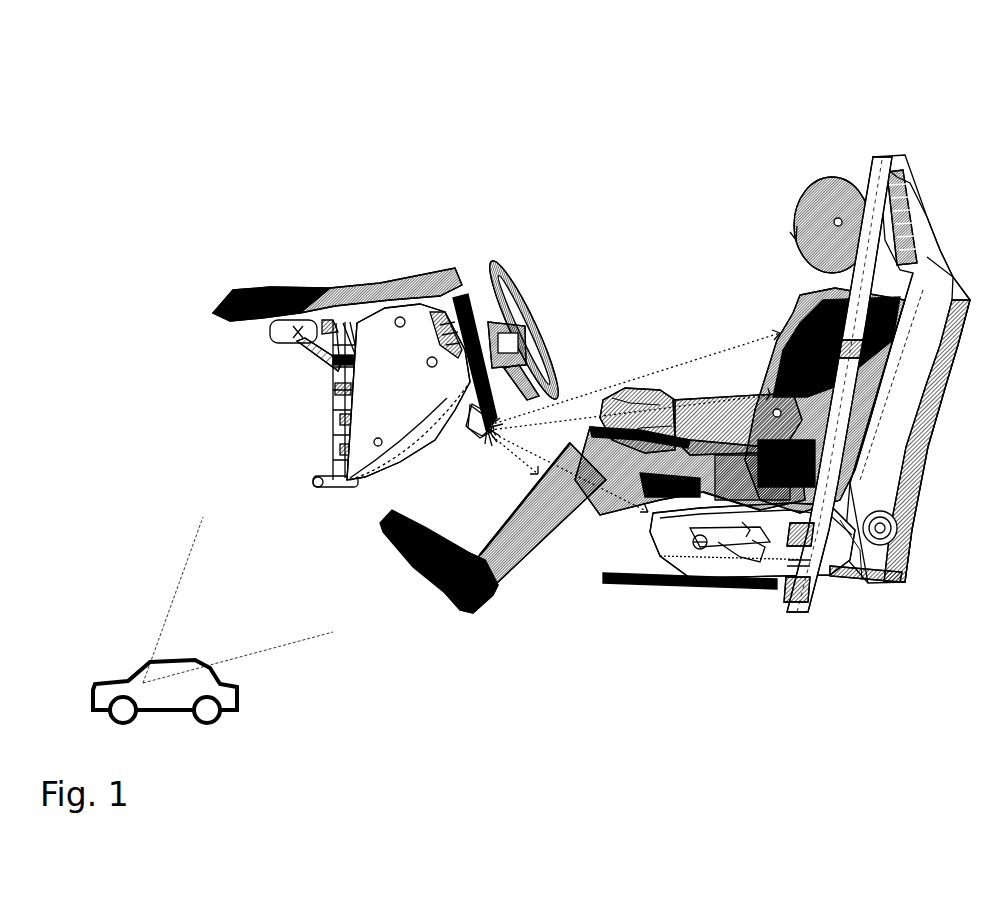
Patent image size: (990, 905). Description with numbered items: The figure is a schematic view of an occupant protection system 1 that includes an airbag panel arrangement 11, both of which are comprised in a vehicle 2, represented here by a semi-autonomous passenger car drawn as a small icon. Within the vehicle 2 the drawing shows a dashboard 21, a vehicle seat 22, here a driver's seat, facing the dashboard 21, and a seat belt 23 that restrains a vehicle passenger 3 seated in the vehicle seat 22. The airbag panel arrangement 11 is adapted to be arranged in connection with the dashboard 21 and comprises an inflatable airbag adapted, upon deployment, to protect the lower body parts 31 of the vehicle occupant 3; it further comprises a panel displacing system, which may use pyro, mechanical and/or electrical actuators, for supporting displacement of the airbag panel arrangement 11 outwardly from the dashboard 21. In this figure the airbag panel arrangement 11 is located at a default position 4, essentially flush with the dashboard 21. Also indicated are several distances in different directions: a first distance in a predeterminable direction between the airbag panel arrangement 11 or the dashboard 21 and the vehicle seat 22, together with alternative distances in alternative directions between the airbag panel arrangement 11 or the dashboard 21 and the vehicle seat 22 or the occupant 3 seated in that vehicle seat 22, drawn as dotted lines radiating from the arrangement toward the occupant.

The occupant protection system 1 is at (650, 184).
The vehicle 2 is at (262, 718).
The vehicle passenger 3 is at (860, 164).
The default position 4 is at (480, 421).
The airbag panel arrangement 11 is at (451, 431).
The dashboard 21 is at (409, 352).
The vehicle seat 22 is at (900, 601).
The seat belt 23 is at (818, 612).
The lower body parts 31 is at (491, 515).